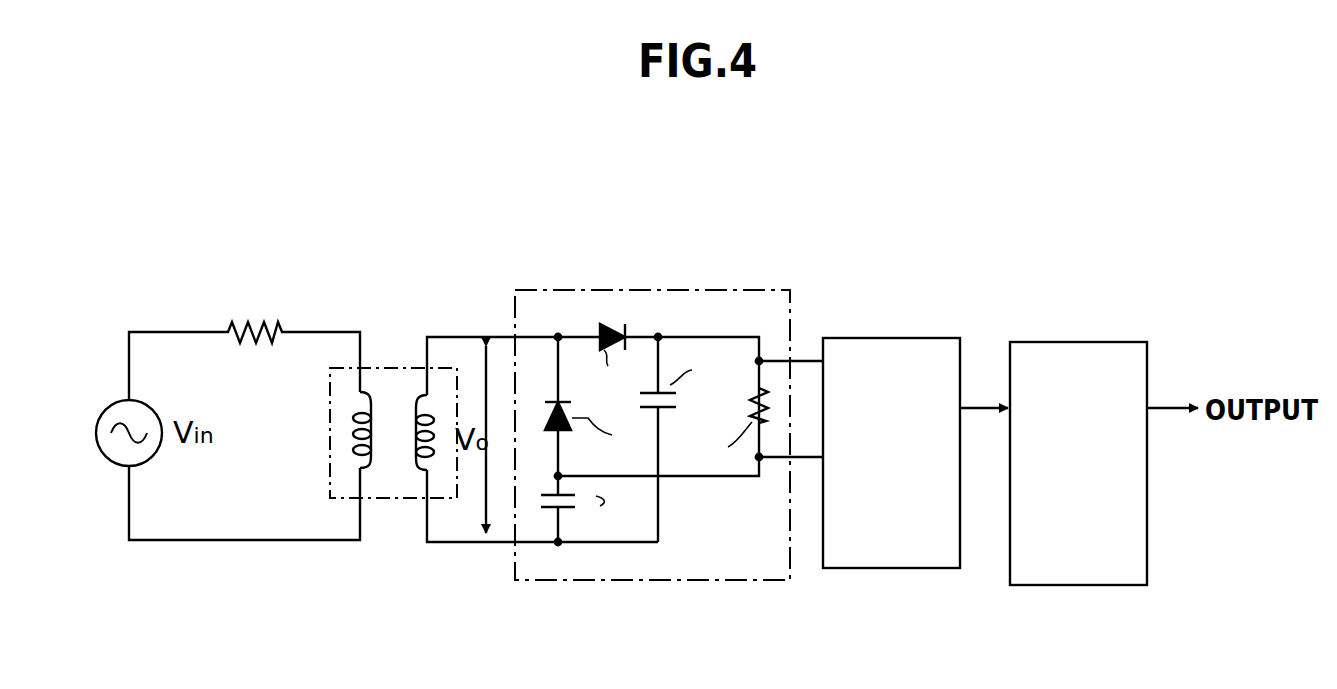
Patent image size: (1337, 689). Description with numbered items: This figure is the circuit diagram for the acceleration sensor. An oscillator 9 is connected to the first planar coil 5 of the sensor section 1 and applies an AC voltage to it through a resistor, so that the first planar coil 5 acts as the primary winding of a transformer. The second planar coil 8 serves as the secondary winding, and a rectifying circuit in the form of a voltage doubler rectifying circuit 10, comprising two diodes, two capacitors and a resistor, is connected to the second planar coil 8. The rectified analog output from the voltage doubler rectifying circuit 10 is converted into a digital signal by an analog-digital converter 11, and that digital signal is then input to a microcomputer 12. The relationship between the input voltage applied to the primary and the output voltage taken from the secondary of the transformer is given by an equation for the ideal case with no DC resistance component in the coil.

The sensor section 1 is at (388, 362).
The first planar coil 5 is at (358, 449).
The second planar coil 8 is at (422, 462).
The oscillator 9 is at (101, 454).
The voltage doubler rectifying circuit 10 is at (701, 290).
The analog-digital converter 11 is at (898, 338).
The microcomputer 12 is at (1083, 342).